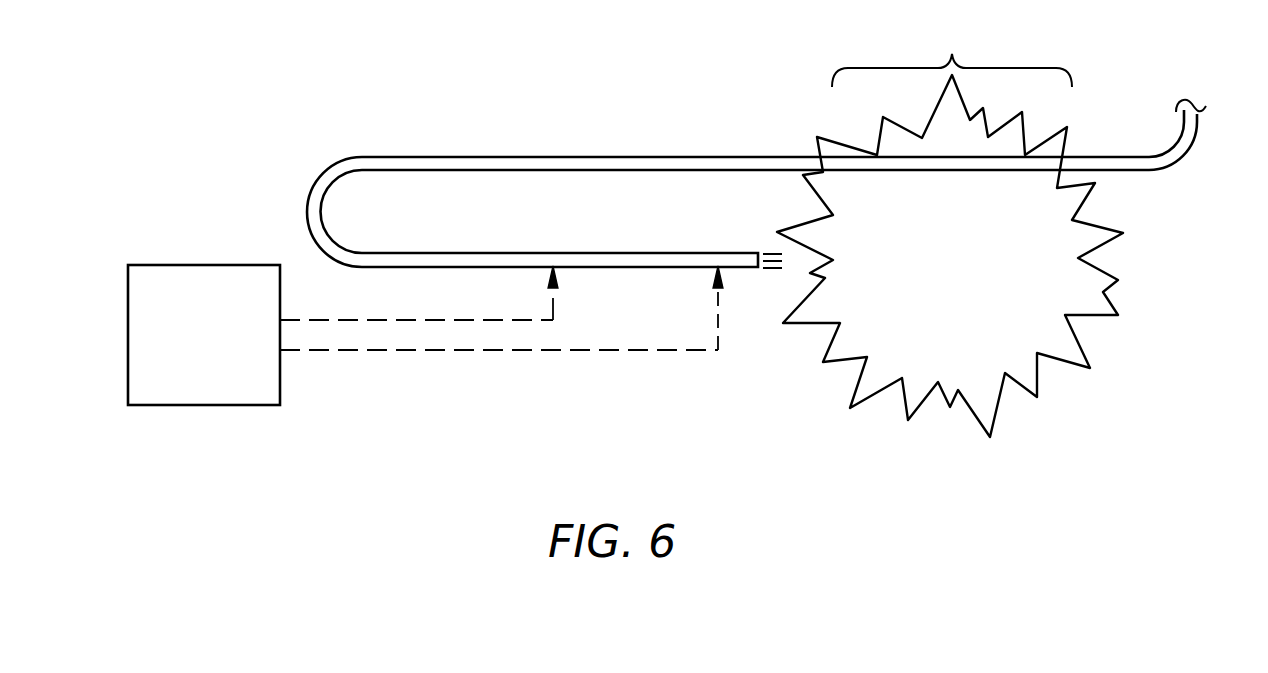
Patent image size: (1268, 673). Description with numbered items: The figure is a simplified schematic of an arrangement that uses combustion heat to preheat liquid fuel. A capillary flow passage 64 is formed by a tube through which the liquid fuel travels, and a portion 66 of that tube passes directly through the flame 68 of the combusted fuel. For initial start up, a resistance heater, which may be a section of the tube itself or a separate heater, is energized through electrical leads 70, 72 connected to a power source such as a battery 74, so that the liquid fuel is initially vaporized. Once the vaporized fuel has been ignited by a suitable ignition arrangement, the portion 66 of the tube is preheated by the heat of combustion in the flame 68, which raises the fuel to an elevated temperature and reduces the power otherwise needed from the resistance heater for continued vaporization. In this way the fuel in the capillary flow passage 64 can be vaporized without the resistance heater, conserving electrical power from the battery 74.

The capillary flow passage 64 is at (1193, 148).
The portion of the tube 66 is at (952, 54).
The flame 68 is at (974, 275).
The electrical lead 70 is at (554, 306).
The electrical lead 72 is at (720, 330).
The battery 74 is at (215, 341).